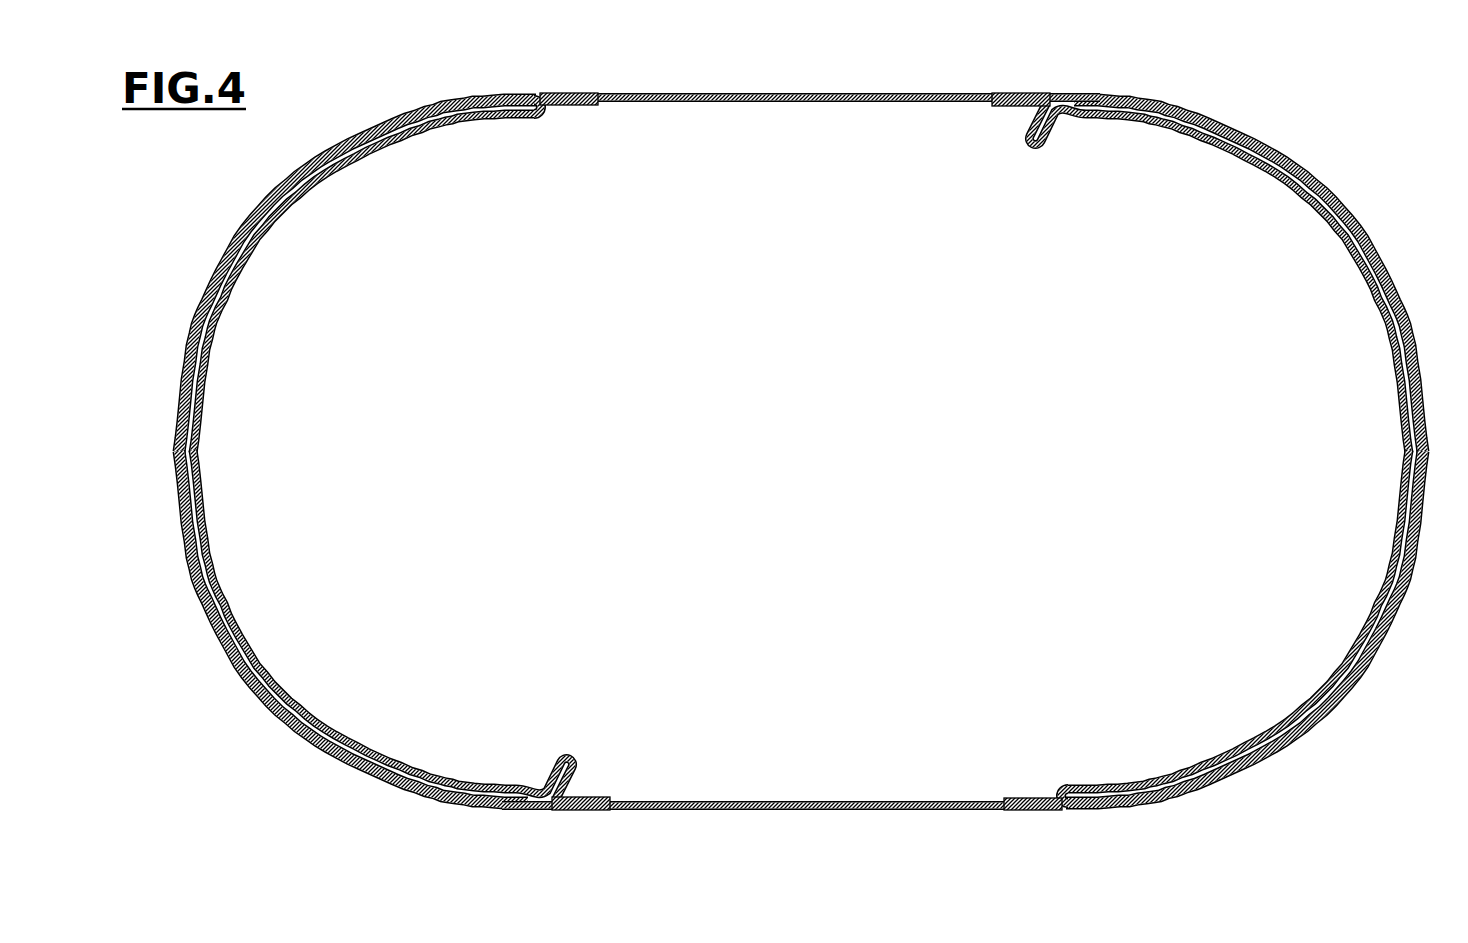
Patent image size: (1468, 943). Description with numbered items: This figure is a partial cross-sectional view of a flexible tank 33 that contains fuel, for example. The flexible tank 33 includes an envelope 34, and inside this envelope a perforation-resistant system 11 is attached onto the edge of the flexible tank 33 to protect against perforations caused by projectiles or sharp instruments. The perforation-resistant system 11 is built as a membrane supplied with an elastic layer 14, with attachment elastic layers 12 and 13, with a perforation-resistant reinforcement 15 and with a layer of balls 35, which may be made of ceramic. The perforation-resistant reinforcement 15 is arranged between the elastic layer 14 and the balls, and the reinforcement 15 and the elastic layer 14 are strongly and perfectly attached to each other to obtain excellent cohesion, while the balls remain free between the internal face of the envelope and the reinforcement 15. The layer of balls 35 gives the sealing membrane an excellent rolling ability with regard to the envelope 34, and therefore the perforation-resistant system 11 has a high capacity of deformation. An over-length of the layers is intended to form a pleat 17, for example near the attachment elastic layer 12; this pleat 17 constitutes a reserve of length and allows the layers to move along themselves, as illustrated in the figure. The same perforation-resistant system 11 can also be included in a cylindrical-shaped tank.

The flexible tank 33 is at (785, 412).
The envelope 34 is at (813, 93).
The attachment elastic layer 12 is at (587, 105).
The attachment elastic layer 13 is at (1001, 106).
The pleat 17 is at (1038, 152).
The perforation-resistant system 11 is at (801, 451).
The perforation-resistant reinforcement 15 is at (200, 491).
The elastic layer 14 is at (785, 451).
The layer of balls 35 is at (178, 449).